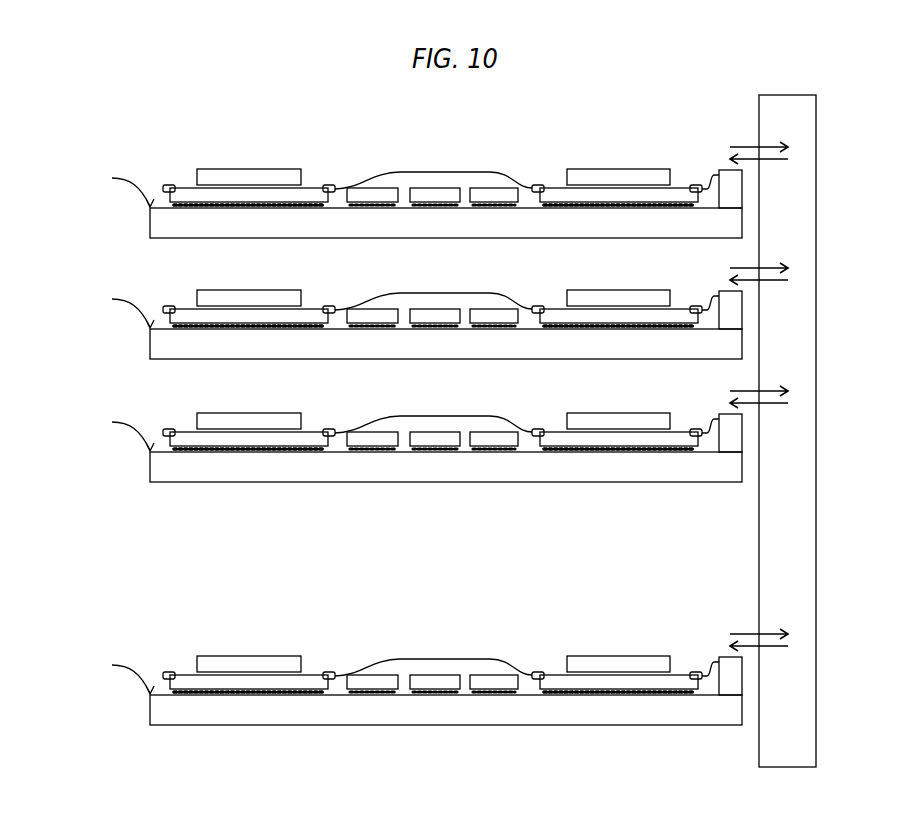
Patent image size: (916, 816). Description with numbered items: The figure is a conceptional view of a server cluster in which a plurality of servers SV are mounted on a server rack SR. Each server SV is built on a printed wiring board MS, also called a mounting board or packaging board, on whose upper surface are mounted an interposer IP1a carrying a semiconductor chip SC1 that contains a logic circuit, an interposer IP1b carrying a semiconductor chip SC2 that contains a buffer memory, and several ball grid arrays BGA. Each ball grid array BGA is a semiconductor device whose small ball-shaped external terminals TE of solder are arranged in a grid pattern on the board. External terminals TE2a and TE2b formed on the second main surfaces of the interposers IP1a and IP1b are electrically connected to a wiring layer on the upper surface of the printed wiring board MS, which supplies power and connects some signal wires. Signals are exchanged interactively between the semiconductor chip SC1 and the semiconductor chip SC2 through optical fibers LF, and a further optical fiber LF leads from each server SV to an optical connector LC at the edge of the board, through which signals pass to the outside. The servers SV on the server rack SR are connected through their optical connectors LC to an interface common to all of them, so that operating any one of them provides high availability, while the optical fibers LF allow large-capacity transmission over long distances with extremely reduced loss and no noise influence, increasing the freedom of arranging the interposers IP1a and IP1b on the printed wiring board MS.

The server rack SR is at (816, 427).
The server SV is at (119, 433).
The printed wiring board MS is at (287, 478).
The optical connector LC is at (721, 170).
The optical fiber LF is at (522, 186).
The semiconductor chip SC1 is at (229, 177).
The semiconductor chip SC2 is at (583, 177).
The interposer IP1a is at (287, 197).
The interposer IP1b is at (641, 197).
The ball grid array BGA is at (385, 446).
The external terminal TE is at (352, 455).
The external terminal TE2a is at (205, 455).
The external terminal TE2b is at (651, 455).